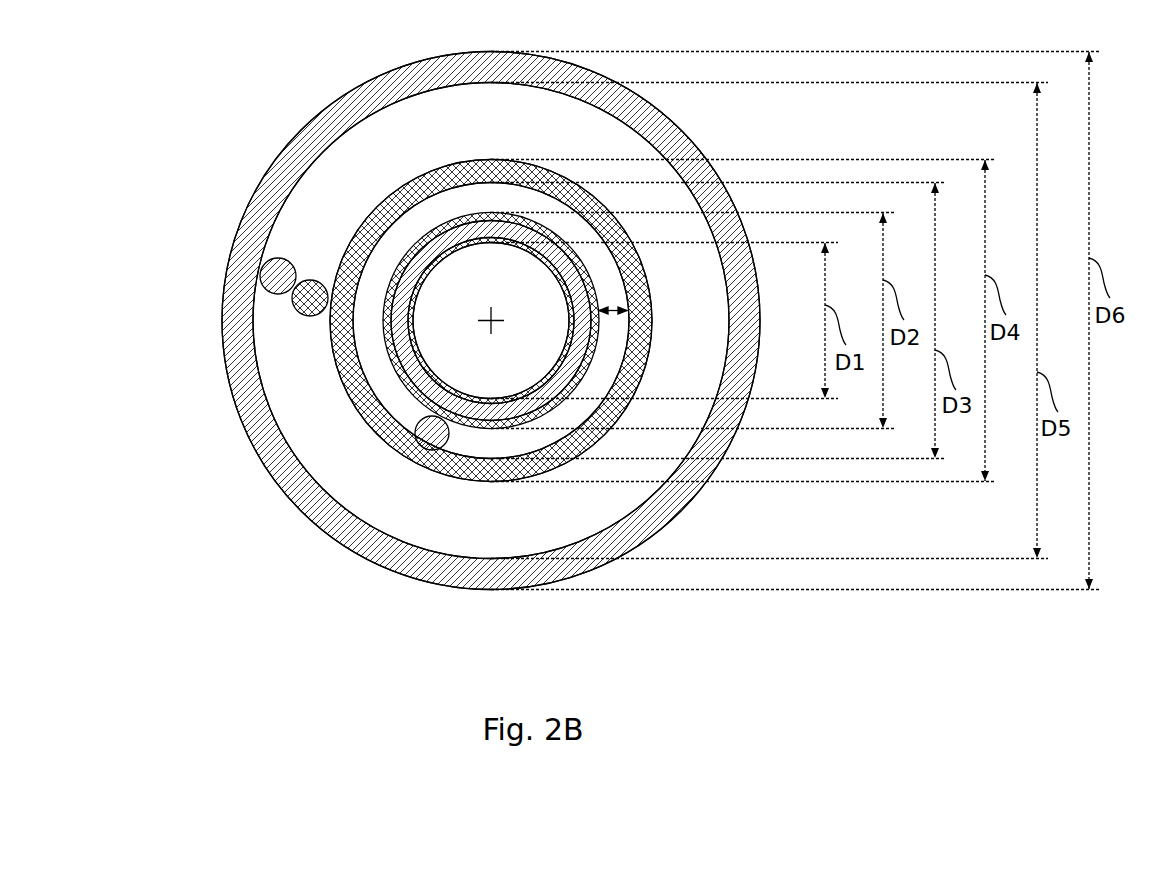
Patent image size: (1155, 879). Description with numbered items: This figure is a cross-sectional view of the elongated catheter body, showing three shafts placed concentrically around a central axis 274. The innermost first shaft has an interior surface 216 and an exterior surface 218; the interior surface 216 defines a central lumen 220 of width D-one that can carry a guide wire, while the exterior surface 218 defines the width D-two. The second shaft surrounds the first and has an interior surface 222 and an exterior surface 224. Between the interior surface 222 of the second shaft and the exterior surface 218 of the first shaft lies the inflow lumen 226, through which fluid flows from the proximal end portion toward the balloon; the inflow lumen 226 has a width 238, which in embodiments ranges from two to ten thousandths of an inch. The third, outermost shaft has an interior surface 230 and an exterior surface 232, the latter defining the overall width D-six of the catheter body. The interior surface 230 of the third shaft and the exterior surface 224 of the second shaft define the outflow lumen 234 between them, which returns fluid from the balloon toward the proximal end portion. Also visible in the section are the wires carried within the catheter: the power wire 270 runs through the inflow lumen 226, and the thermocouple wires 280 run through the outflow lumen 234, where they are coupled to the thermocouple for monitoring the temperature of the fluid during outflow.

The interior surface 216 is at (422, 237).
The exterior surface 218 is at (458, 220).
The lumen 220 is at (430, 307).
The interior surface 222 is at (353, 407).
The exterior surface 224 is at (385, 438).
The inflow lumen 226 is at (362, 353).
The interior surface 230 is at (355, 548).
The exterior surface 232 is at (407, 578).
The outflow lumen 234 is at (290, 406).
The width 238 is at (613, 312).
The power wire 270 is at (412, 440).
The central axis 274 is at (491, 320).
The thermocouple wires 280 is at (262, 275).